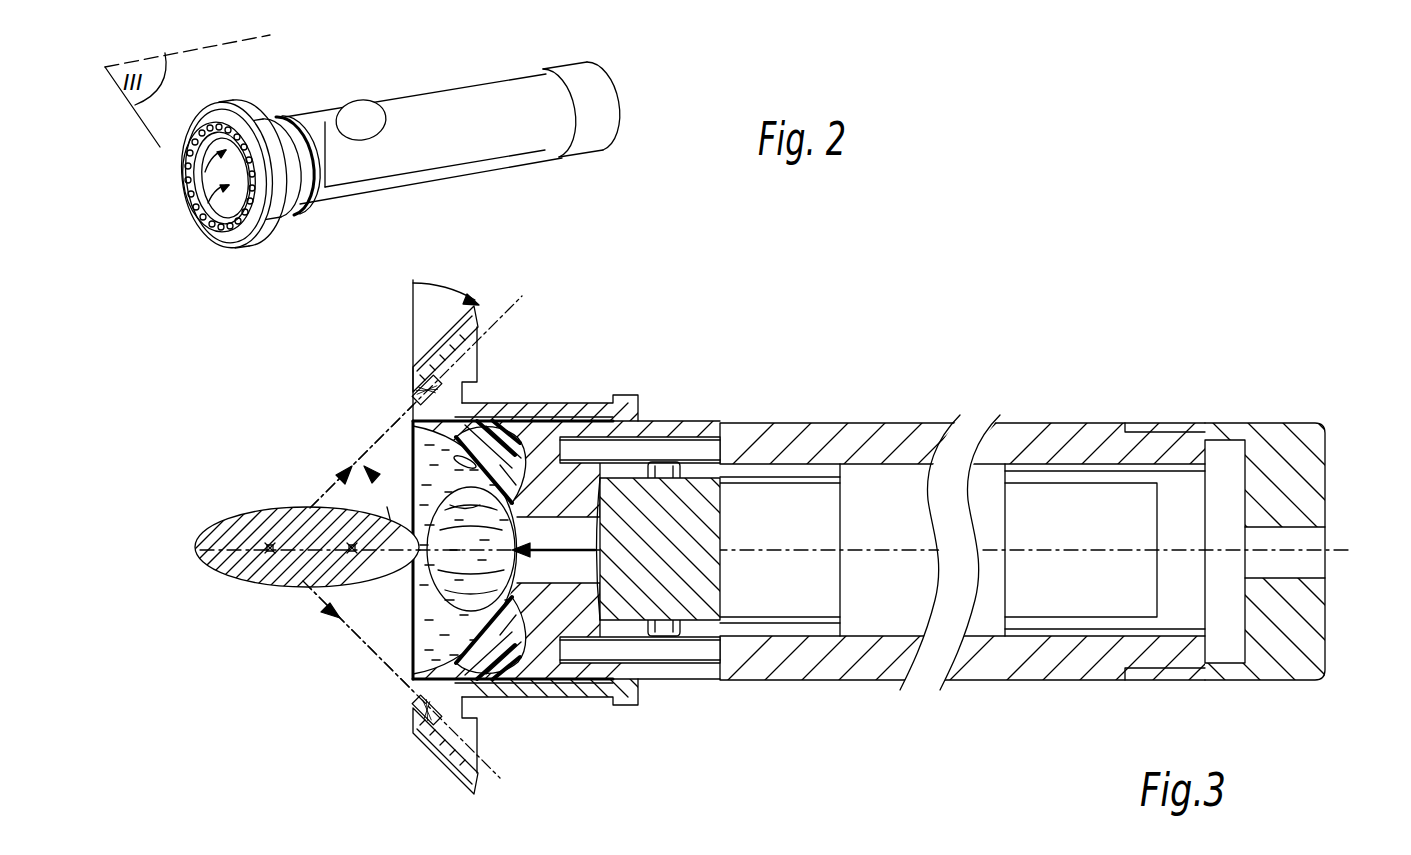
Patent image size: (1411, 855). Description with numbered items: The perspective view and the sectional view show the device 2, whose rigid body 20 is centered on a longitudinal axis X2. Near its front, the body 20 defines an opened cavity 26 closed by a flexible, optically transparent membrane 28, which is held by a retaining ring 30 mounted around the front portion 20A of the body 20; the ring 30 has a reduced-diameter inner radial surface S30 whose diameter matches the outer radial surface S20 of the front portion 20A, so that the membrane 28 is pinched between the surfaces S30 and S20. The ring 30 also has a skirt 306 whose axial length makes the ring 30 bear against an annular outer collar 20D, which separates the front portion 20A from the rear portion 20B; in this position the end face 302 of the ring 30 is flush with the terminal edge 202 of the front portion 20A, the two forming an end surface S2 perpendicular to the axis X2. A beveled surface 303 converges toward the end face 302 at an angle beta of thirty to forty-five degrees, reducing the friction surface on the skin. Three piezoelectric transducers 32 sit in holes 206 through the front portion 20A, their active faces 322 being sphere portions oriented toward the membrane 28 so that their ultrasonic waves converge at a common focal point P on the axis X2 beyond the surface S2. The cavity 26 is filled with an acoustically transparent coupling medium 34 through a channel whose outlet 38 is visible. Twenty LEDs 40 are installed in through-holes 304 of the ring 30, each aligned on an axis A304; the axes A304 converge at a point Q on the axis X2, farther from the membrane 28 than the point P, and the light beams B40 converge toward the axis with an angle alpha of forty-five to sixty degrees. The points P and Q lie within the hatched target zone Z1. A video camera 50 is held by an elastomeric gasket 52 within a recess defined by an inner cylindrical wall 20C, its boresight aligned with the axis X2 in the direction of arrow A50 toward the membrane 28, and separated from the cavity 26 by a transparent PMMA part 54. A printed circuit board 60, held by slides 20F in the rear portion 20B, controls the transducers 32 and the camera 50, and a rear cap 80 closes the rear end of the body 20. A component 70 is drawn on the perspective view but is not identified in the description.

In FIG. 2, the device 2 is at (435, 56).
In FIG. 3, the device 2 is at (1058, 345).
In FIG. 2, the rigid body 20 is at (395, 190).
In FIG. 3, the front portion of body 20A is at (560, 430).
In FIG. 3, the rear portion of body 20B is at (775, 437).
In FIG. 3, the inner cylindrical wall 20C is at (620, 632).
In FIG. 2, the annular outer collar 20D is at (303, 185).
In FIG. 3, the annular outer collar 20D is at (660, 465).
In FIG. 2, the slides 20F is at (515, 123).
In FIG. 3, the slides 20F is at (1072, 470).
In FIG. 3, the opened cavity 26 is at (413, 607).
In FIG. 2, the flexible membrane 28 is at (205, 178).
In FIG. 3, the flexible membrane 28 is at (447, 463).
In FIG. 2, the retaining ring 30 is at (220, 118).
In FIG. 2, the piezoelectric ceramic transducers 32 is at (188, 170).
In FIG. 3, the piezoelectric ceramic transducers 32 is at (503, 433).
In FIG. 3, the coupling medium 34 is at (563, 420).
In FIG. 3, the channel outlet 38 is at (413, 492).
In FIG. 3, the LEDs 40 is at (413, 703).
In FIG. 3, the video camera 50 is at (705, 577).
In FIG. 3, the elastomeric gasket 52 is at (668, 458).
In FIG. 3, the transparent part 54 is at (593, 630).
In FIG. 3, the printed circuit board 60 is at (890, 622).
In FIG. 2, the button 70 is at (355, 110).
In FIG. 2, the rear cap 80 is at (585, 82).
In FIG. 3, the rear cap 80 is at (1305, 632).
In FIG. 3, the terminal edge 202 is at (455, 430).
In FIG. 3, the hole 206 is at (500, 637).
In FIG. 3, the end face 302 is at (413, 417).
In FIG. 3, the beveled surface 303 is at (438, 767).
In FIG. 2, the through-holes 304 is at (185, 135).
In FIG. 3, the through-holes 304 is at (478, 330).
In FIG. 3, the active faces 322 is at (300, 587).
In FIG. 2, the skirt 306 is at (292, 215).
In FIG. 3, the arrow A50 is at (553, 539).
In FIG. 3, the through-hole axis A304 is at (551, 289).
In FIG. 3, the light beams B40 is at (370, 604).
In FIG. 3, the end surface S2 is at (258, 455).
In FIG. 3, the outer radial surface S20 is at (583, 690).
In FIG. 3, the inner radial surface S30 is at (413, 630).
In FIG. 3, the longitudinal axis X2 is at (1384, 552).
In FIG. 3, the target zone Z1 is at (200, 550).
In FIG. 3, the convergence point Q is at (267, 533).
In FIG. 3, the focal point P is at (351, 533).
In FIG. 3, the angle of convergence alpha is at (386, 514).
In FIG. 3, the bevel angle beta is at (446, 284).